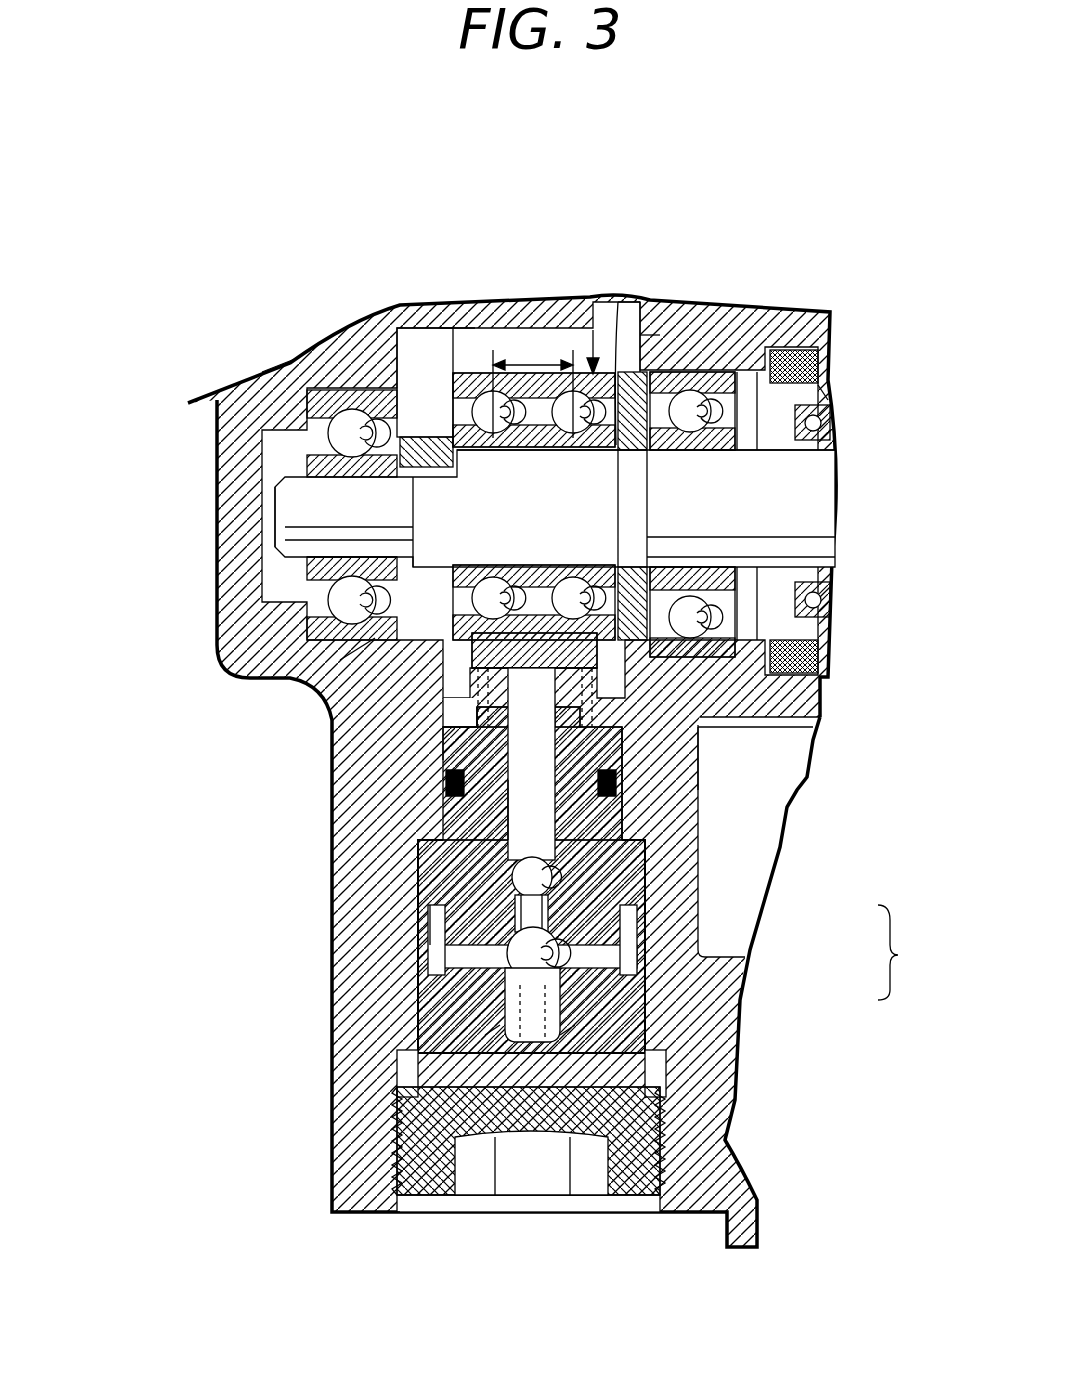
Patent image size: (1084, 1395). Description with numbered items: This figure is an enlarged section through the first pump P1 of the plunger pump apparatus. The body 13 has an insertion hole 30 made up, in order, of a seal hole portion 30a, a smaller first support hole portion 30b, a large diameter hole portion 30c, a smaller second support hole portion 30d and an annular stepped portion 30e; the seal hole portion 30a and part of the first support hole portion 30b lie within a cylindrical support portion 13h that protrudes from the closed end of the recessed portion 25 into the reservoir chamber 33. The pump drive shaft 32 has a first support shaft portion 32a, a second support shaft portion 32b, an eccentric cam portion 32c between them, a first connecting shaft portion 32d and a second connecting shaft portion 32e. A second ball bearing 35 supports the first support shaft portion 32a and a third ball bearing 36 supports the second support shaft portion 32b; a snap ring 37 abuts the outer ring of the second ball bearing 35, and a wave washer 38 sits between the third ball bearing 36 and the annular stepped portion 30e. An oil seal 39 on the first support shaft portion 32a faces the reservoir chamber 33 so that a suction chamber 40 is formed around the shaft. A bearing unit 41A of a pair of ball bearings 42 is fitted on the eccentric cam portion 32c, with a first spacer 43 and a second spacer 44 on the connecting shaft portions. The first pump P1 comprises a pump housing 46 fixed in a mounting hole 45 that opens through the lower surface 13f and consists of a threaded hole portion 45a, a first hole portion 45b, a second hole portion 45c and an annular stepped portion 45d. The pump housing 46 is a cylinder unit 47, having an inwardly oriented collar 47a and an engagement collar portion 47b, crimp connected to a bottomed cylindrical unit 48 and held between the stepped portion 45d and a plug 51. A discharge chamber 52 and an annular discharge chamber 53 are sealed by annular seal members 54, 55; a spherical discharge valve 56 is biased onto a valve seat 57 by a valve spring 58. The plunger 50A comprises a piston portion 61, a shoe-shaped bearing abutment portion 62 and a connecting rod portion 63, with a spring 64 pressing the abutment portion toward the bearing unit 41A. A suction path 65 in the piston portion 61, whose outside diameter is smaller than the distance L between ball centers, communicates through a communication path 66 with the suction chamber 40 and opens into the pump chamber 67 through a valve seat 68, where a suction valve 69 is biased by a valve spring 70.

The body 13 is at (340, 1125).
The lower surface 13f is at (358, 1213).
The support portion 13h is at (805, 718).
The recessed portion 25 is at (700, 800).
The insertion hole 30 is at (273, 437).
The seal hole portion 30a is at (822, 392).
The first support hole portion 30b is at (650, 332).
The large diameter hole portion 30c is at (457, 328).
The second support hole portion 30d is at (375, 638).
The annular stepped portion 30e is at (270, 372).
The pump drive shaft 32 is at (762, 440).
The first support shaft portion 32a is at (812, 507).
The second support shaft portion 32b is at (276, 545).
The eccentric cam portion 32c is at (527, 452).
The first connecting shaft portion 32d is at (636, 510).
The second connecting shaft portion 32e is at (440, 437).
The reservoir chamber 33 is at (775, 850).
The second ball bearing 35 is at (700, 372).
The third ball bearing 36 is at (366, 585).
The snap ring 37 is at (790, 348).
The wave washer 38 is at (335, 615).
The oil seal 39 is at (822, 435).
The suction chamber 40 is at (433, 350).
The bearing unit 41A is at (593, 330).
The ball bearing 42 is at (495, 437).
The first spacer 43 is at (622, 305).
The second spacer 44 is at (345, 393).
The mounting hole 45 is at (690, 1128).
The threaded hole portion 45a is at (757, 1208).
The first hole portion 45b is at (428, 960).
The second hole portion 45c is at (450, 728).
The annular stepped portion 45d is at (425, 880).
The pump housing 46 is at (907, 952).
The cylinder unit 47 is at (640, 915).
The inwardly oriented collar 47a is at (420, 1015).
The engagement collar portion 47b is at (435, 912).
The bottomed cylindrical unit 48 is at (640, 975).
The plunger 50A is at (472, 828).
The plug 51 is at (633, 1185).
The discharge chamber 52 is at (530, 1050).
The annular discharge chamber 53 is at (650, 893).
The annular seal member 54 is at (640, 1005).
The annular seal member 55 is at (455, 800).
The discharge valve 56 is at (590, 1040).
The valve seat 57 is at (495, 1030).
The valve spring 58 is at (565, 1030).
The piston portion 61 is at (698, 740).
The bearing abutment portion 62 is at (647, 540).
The connecting rod portion 63 is at (538, 650).
The spring 64 is at (470, 727).
The suction path 65 is at (700, 775).
The communication path 66 is at (772, 672).
The pump chamber 67 is at (615, 892).
The valve seat 68 is at (622, 808).
The suction valve 69 is at (615, 848).
The valve spring 70 is at (340, 970).
The distance between centers of balls L is at (527, 300).
The first pump P1 is at (400, 1027).